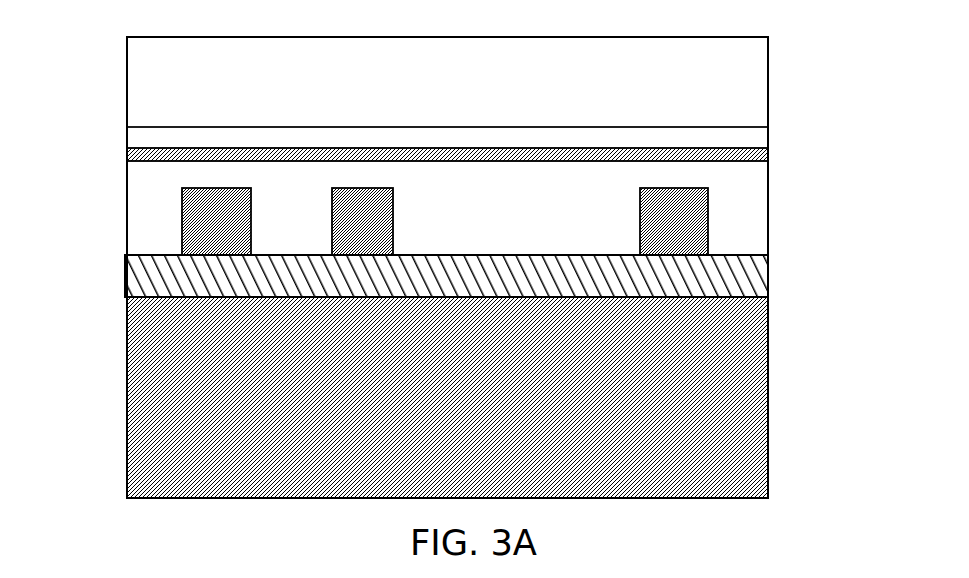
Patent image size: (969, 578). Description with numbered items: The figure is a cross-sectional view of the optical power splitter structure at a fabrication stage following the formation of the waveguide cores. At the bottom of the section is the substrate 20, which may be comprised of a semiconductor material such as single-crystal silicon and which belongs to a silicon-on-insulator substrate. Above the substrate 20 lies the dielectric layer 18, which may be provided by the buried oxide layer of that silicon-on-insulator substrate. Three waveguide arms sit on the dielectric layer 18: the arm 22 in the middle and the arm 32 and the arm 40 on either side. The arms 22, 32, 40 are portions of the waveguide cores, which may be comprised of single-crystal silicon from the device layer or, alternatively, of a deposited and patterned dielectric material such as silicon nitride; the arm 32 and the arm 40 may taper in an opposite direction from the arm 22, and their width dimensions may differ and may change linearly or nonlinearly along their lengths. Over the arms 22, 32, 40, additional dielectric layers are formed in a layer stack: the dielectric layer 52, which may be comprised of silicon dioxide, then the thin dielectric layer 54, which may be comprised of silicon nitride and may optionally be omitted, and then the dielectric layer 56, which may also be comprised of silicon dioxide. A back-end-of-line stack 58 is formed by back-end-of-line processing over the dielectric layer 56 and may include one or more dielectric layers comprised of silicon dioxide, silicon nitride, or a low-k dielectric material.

The back-end-of-line stack 58 is at (147, 62).
The dielectric layer 56 is at (155, 143).
The dielectric layer 54 is at (730, 153).
The dielectric layer 52 is at (159, 182).
The arm 32 is at (215, 220).
The arm 22 is at (373, 220).
The arm 40 is at (675, 219).
The dielectric layer 18 is at (730, 277).
The substrate 20 is at (157, 413).